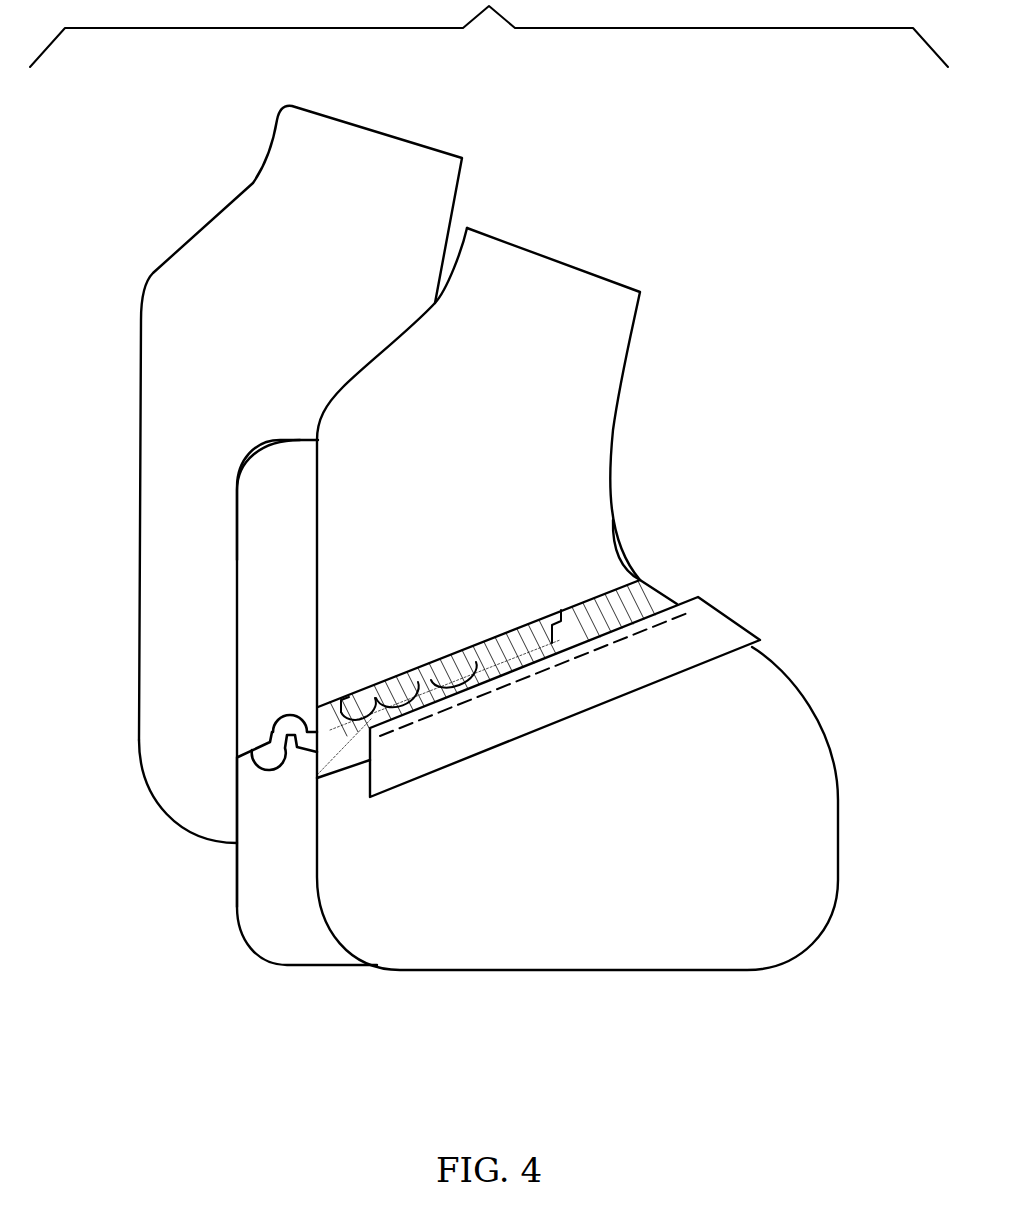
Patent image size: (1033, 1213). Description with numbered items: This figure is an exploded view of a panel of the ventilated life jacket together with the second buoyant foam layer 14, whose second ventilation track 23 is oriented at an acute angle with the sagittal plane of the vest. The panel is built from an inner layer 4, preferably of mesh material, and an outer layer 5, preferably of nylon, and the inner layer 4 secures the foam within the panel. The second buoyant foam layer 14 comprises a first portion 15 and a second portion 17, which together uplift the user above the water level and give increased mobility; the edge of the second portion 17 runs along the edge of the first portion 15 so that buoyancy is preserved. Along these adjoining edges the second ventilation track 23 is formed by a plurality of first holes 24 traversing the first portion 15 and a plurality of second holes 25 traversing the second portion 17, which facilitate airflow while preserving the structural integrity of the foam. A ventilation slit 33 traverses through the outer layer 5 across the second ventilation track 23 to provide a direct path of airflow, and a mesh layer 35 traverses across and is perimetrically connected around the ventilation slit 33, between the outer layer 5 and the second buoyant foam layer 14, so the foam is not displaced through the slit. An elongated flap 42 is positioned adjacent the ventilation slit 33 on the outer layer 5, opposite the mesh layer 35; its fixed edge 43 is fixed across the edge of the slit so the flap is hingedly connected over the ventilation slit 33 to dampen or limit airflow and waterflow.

The inner layer 4 is at (423, 158).
The outer layer 5 is at (597, 270).
The second buoyant foam layer 14 is at (238, 955).
The first portion 15 is at (247, 498).
The second portion 17 is at (252, 775).
The second ventilation track 23 is at (268, 737).
The plurality of first holes 24 is at (287, 716).
The plurality of second holes 25 is at (273, 768).
The ventilation slit 33 is at (662, 590).
The mesh layer 35 is at (578, 601).
The elongated flap 42 is at (740, 628).
The fixed edge 43 is at (698, 597).